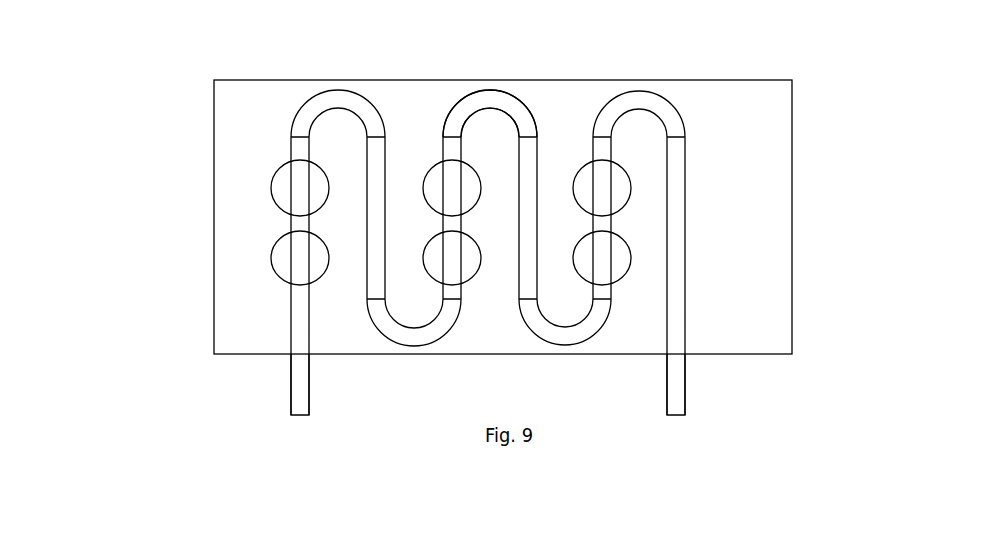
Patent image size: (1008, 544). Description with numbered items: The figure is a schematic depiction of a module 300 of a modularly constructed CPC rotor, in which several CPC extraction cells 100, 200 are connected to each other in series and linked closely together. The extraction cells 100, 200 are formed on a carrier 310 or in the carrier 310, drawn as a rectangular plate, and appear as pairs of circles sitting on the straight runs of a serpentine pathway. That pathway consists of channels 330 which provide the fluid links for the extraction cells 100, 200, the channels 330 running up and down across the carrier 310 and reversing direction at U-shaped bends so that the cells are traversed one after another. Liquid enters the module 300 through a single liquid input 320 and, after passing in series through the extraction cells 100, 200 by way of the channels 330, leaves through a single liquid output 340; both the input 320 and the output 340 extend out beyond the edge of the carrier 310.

The module 300 is at (461, 242).
The carrier 310 is at (757, 208).
The liquid input 320 is at (685, 388).
The channels 330 is at (520, 117).
The liquid output 340 is at (301, 371).
The CPC extraction cell 100 is at (285, 188).
The CPC extraction cell 200 is at (285, 270).